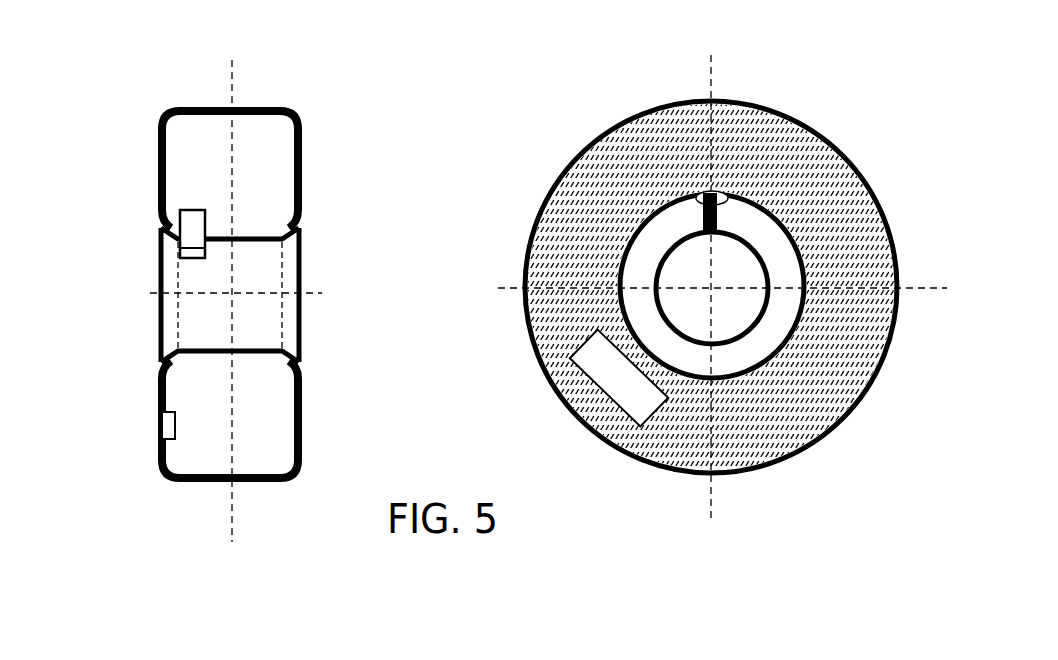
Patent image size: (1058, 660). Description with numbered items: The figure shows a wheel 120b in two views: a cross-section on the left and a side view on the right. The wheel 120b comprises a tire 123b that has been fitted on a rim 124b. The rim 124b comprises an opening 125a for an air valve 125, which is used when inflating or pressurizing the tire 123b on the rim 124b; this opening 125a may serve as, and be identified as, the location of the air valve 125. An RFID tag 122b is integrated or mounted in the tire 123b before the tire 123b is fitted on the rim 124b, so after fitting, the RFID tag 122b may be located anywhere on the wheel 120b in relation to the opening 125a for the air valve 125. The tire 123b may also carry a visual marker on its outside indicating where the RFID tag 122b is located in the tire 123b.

The wheel 120b is at (136, 170).
The RFID tag 122b is at (160, 426).
The tire 123b is at (300, 162).
The rim 124b is at (299, 268).
The air valve 125 is at (190, 216).
The opening 125a is at (180, 246).